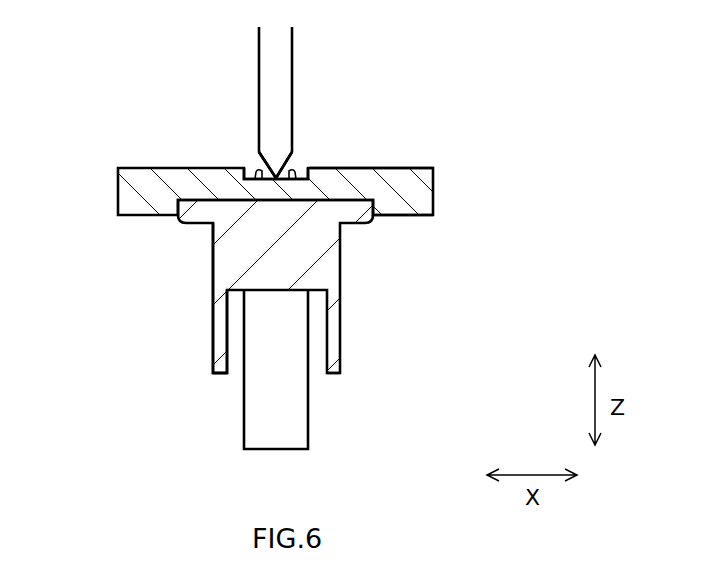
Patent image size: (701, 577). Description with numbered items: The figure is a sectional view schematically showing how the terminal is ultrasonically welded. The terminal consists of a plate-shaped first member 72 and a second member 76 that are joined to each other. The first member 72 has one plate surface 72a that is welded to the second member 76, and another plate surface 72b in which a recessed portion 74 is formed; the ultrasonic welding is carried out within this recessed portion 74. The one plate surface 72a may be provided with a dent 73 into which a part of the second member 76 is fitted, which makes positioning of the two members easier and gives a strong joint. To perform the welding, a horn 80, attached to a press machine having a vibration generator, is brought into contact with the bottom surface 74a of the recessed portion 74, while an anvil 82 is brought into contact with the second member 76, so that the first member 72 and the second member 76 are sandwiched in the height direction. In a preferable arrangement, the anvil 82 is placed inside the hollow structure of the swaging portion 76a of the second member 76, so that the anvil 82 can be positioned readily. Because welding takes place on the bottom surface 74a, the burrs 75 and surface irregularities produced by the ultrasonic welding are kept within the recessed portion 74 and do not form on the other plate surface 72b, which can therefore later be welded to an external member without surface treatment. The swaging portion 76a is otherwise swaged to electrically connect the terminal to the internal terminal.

The first member 72 is at (434, 190).
The one plate surface 72a is at (405, 217).
The other plate surface 72b is at (388, 168).
The dent 73 is at (213, 232).
The recessed portion 74 is at (304, 155).
The bottom surface 74a is at (246, 178).
The burrs 75 is at (258, 172).
The second member 76 is at (330, 263).
The swaging portion 76a is at (227, 340).
The horn 80 is at (293, 42).
The anvil 82 is at (310, 432).